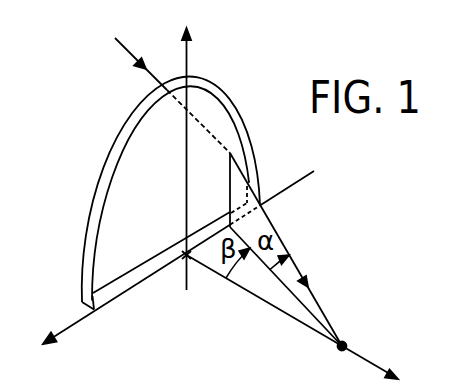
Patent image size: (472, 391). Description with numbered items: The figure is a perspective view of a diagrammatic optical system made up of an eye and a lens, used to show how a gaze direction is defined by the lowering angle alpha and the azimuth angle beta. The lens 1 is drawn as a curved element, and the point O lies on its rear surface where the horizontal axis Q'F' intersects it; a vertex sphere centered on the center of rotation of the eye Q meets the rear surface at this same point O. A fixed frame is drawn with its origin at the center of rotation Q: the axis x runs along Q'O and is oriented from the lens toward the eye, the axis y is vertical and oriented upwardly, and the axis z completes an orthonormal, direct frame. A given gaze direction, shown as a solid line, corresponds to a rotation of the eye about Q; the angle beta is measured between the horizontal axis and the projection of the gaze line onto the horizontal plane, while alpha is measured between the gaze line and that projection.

The curved optical shell / arcuate element 1 is at (90, 189).
The x axis x is at (299, 317).
The y axis y is at (197, 153).
The z axis z is at (178, 270).
The point O is at (177, 274).
The center of rotation of the eye Q is at (359, 335).